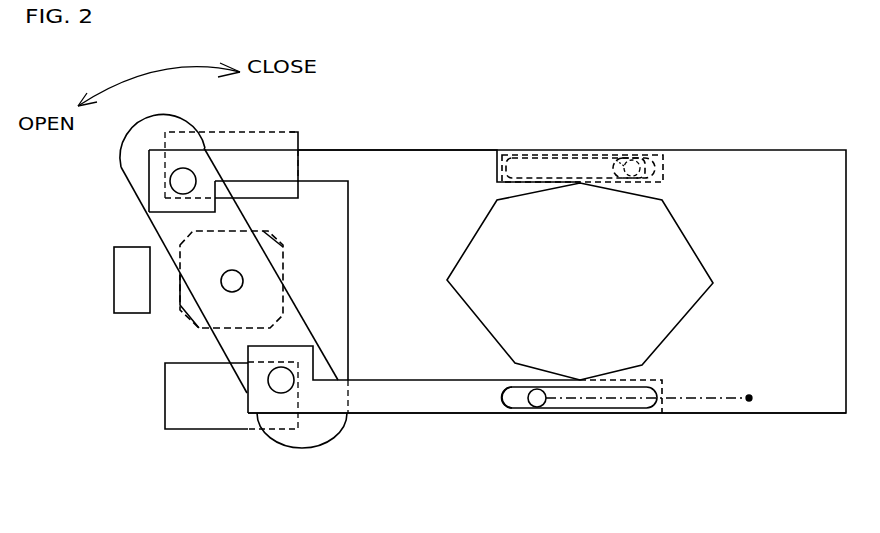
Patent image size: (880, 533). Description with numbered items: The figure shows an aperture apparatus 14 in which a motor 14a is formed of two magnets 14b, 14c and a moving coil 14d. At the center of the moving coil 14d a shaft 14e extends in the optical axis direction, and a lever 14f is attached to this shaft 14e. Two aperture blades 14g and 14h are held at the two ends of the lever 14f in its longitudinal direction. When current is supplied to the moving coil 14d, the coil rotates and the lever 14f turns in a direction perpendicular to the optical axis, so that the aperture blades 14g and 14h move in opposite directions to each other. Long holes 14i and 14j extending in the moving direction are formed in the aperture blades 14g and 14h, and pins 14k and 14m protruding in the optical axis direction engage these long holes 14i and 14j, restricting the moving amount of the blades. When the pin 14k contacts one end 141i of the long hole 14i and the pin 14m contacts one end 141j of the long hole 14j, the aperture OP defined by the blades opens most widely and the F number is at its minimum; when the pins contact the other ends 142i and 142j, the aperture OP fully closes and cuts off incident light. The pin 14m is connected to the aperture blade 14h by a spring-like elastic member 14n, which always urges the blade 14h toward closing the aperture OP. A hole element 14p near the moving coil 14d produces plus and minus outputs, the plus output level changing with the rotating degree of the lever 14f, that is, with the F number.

The aperture apparatus 14 is at (425, 40).
The motor 14a is at (153, 350).
The magnet 14b is at (290, 131).
The magnet 14c is at (197, 423).
The moving coil 14d is at (282, 247).
The shaft 14e is at (243, 279).
The lever 14f is at (323, 445).
The aperture blade 14g is at (462, 151).
The aperture blade 14h is at (758, 413).
The long hole 14i is at (575, 157).
The one end of long hole 141i is at (655, 165).
The other end of long hole 142i is at (506, 160).
The long hole 14j is at (578, 408).
The one end of long hole 141j is at (510, 408).
The other end of long hole 142j is at (650, 408).
The pin 14k is at (620, 165).
The pin 14m is at (546, 392).
The elastic member 14n is at (708, 397).
The hole element 14p is at (114, 278).
The aperture OP is at (492, 293).